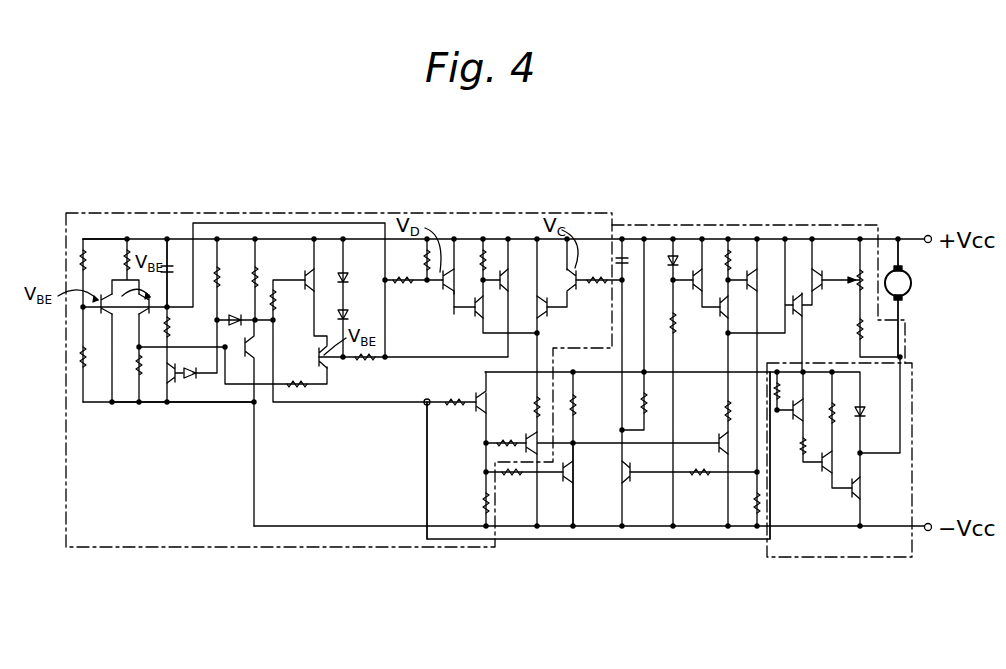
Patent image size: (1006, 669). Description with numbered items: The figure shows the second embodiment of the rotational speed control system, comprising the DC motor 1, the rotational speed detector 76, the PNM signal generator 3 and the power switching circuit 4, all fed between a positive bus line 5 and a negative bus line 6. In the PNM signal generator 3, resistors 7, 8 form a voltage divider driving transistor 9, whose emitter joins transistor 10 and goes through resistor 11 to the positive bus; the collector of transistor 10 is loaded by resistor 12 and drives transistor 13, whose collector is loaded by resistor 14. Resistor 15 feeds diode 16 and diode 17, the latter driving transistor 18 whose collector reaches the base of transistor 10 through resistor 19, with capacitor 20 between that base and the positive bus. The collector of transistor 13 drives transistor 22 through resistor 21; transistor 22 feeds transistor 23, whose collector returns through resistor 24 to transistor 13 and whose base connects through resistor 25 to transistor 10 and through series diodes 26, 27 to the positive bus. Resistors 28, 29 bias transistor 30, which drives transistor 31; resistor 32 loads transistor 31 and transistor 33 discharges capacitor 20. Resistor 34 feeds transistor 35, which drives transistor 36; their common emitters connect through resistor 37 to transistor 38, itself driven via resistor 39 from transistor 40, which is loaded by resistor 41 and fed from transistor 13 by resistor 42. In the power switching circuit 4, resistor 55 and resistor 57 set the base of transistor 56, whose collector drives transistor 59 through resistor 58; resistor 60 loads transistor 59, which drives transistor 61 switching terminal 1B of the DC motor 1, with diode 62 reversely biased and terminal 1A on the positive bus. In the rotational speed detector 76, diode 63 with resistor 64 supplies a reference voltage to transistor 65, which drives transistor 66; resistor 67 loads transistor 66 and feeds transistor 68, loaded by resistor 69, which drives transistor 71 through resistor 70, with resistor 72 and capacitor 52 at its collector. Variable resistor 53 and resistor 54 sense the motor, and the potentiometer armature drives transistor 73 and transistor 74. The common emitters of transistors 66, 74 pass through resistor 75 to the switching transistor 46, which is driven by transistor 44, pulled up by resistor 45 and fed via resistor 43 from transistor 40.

The DC motor 1 is at (913, 283).
The terminal of the DC motor 1A is at (903, 272).
The terminal of the DC motor 1B is at (905, 302).
The PNM signal generator 3 is at (140, 213).
The power switching circuit 4 is at (748, 590).
The positive bus line 5 is at (108, 238).
The negative bus line 6 is at (97, 404).
The resistor 7 is at (86, 262).
The resistor 8 is at (90, 360).
The transistor 9 is at (108, 310).
The transistor 10 is at (140, 310).
The resistor 11 is at (126, 252).
The resistor 12 is at (138, 370).
The transistor 13 is at (263, 352).
The resistor 14 is at (258, 272).
The resistor 15 is at (220, 272).
The diode 16 is at (233, 316).
The diode 17 is at (194, 380).
The transistor 18 is at (171, 376).
The resistor 19 is at (170, 327).
The capacitor 20 is at (168, 264).
The resistor 21 is at (275, 300).
The transistor 22 is at (312, 272).
The transistor 23 is at (322, 364).
The resistor 24 is at (295, 382).
The resistor 25 is at (366, 360).
The diode 26 is at (346, 278).
The diode 27 is at (347, 312).
The resistor 28 is at (404, 284).
The resistor 29 is at (424, 262).
The transistor 30 is at (447, 288).
The transistor 31 is at (477, 315).
The resistor 32 is at (480, 262).
The transistor 33 is at (502, 288).
The resistor 34 is at (597, 278).
The transistor 35 is at (577, 290).
The transistor 36 is at (548, 316).
The resistor 37 is at (536, 400).
The transistor 38 is at (540, 452).
The resistor 39 is at (503, 441).
The transistor 40 is at (476, 406).
The resistor 41 is at (483, 503).
The resistor 42 is at (451, 400).
The resistor 43 is at (507, 475).
The transistor 44 is at (565, 482).
The resistor 45 is at (572, 404).
The transistor 46 is at (720, 440).
The capacitor 52 is at (622, 254).
The variable resistor 53 is at (852, 280).
The resistor 54 is at (858, 328).
The resistor 55 is at (783, 470).
The transistor 56 is at (812, 415).
The resistor 57 is at (783, 388).
The resistor 58 is at (798, 447).
The transistor 59 is at (822, 475).
The resistor 60 is at (834, 410).
The transistor 61 is at (864, 498).
The diode 62 is at (880, 403).
The diode 63 is at (671, 268).
The resistor 64 is at (671, 327).
The transistor 65 is at (694, 300).
The transistor 66 is at (718, 318).
The resistor 67 is at (727, 250).
The transistor 68 is at (745, 290).
The resistor 69 is at (752, 507).
The resistor 70 is at (700, 476).
The transistor 71 is at (628, 480).
The resistor 72 is at (645, 412).
The transistor 73 is at (816, 268).
The transistor 74 is at (792, 313).
The resistor 75 is at (725, 408).
The rotational speed detector 76 is at (648, 225).